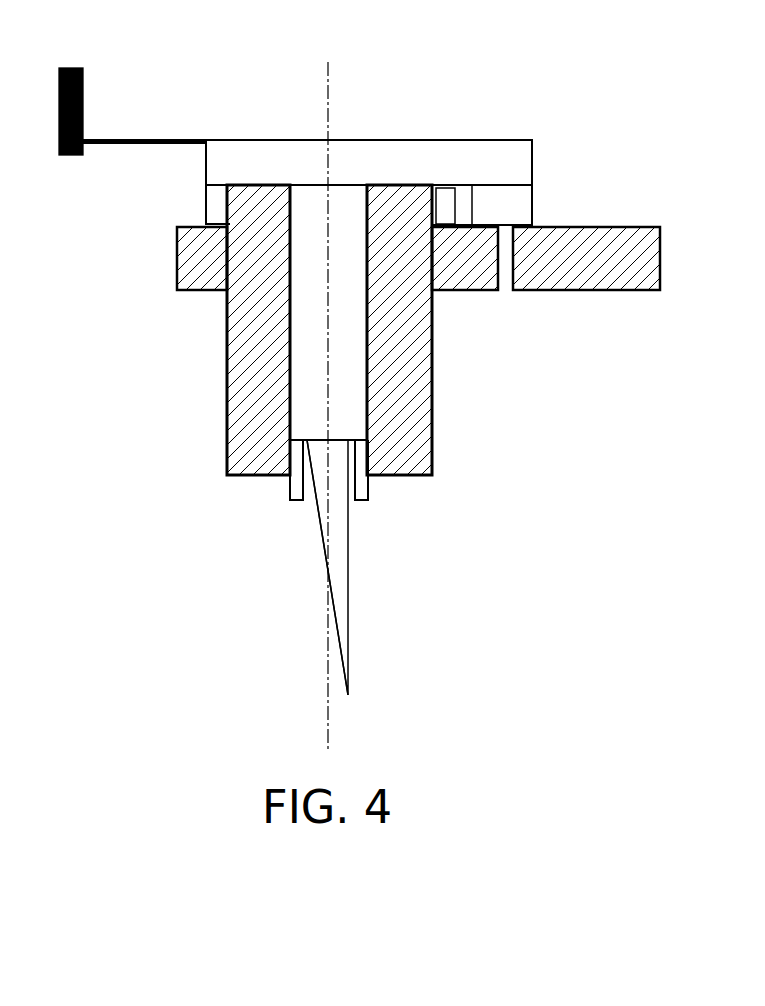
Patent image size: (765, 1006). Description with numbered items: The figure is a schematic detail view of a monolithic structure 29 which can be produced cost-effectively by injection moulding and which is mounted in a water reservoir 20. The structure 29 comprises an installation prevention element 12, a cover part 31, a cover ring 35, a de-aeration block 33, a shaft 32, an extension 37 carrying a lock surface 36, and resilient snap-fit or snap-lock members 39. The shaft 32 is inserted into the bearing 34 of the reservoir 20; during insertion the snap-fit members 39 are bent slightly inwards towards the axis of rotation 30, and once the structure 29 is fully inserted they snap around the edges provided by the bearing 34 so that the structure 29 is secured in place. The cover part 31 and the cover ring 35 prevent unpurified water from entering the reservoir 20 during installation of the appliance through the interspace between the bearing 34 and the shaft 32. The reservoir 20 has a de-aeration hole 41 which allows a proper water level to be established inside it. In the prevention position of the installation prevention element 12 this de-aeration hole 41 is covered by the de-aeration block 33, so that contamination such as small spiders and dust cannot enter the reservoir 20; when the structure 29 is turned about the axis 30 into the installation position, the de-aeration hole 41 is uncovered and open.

The installation prevention element 12 is at (84, 78).
The reservoir 20 is at (637, 226).
The monolithic structure 29 is at (590, 83).
The axis of rotation 30 is at (330, 78).
The cover part 31 is at (533, 163).
The shaft 32 is at (342, 356).
The de-aeration block 33 is at (533, 207).
The bearing 34 is at (432, 406).
The cover ring 35 is at (205, 206).
The lock surface 36 is at (349, 610).
The extension 37 is at (337, 568).
The snap-fit members 39 is at (289, 480).
The de-aeration hole 41 is at (505, 292).